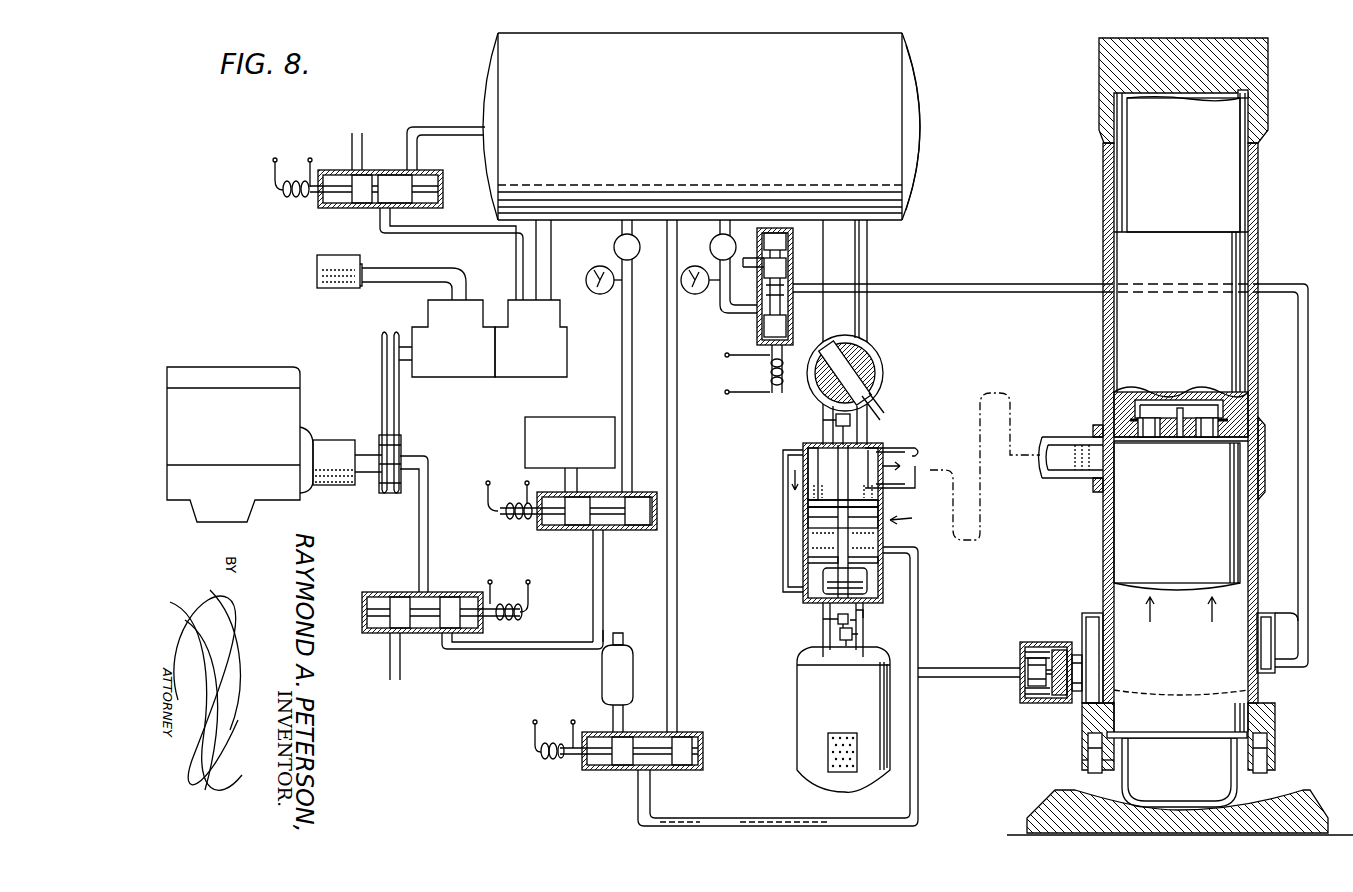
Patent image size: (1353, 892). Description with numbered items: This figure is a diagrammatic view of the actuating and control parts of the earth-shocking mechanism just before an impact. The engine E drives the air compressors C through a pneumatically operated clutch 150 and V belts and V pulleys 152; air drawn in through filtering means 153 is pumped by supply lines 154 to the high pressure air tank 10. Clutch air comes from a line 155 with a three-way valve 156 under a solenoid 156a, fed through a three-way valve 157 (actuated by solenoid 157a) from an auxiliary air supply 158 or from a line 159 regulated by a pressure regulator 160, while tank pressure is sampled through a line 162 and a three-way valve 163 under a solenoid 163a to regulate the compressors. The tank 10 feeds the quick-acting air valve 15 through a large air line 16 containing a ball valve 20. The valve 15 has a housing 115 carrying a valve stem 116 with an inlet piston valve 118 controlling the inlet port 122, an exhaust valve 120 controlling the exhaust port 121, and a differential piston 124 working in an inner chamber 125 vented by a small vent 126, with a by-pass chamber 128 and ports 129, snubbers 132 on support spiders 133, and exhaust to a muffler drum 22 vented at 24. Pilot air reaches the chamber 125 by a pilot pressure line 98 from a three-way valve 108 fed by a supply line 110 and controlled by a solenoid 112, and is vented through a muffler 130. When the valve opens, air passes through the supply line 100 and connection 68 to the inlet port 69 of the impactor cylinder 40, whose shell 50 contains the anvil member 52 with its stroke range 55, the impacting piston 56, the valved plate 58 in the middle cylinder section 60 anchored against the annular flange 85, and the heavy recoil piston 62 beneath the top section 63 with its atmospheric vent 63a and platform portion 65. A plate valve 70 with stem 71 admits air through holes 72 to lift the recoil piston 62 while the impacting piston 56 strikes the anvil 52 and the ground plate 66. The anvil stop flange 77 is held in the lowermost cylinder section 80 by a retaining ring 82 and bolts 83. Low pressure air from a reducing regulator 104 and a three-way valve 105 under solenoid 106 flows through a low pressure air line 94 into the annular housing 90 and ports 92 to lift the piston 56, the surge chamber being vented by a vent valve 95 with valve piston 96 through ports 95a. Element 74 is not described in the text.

The air tank 10 is at (887, 63).
The quick-acting air valve 15 is at (913, 518).
The air line 16 is at (866, 258).
The ball valve 20 is at (876, 356).
The muffler drum 22 is at (843, 719).
The vent 24 is at (828, 752).
The impactor cylinder 40 is at (1267, 204).
The shell 50 is at (1103, 156).
The anvil member 52 is at (1181, 748).
The stroke range 55 is at (1228, 758).
The impacting piston 56 is at (1177, 532).
The valved plate 58 is at (1250, 410).
The middle cylinder section 60 is at (1264, 466).
The recoil piston 62 is at (1181, 247).
The top section 63 is at (1268, 72).
The atmospheric vent 63a is at (1270, 98).
The platform portion 65 is at (1170, 99).
The ground plate 66 is at (1045, 814).
The high-volume high-pressure connection 68 is at (1095, 437).
The inlet port 69 is at (1098, 478).
The plate valve 70 is at (1158, 402).
The stem 71 is at (1178, 436).
The holes 72 is at (1148, 438).
The valve seats 74 is at (1135, 422).
The stop flange 77 is at (1200, 735).
The lowermost cylinder section 80 is at (1275, 725).
The retaining ring 82 is at (1082, 760).
The bolts 83 is at (1088, 776).
The annular flange 85 is at (1258, 437).
The annular housing 90 is at (1290, 595).
The ports 92 is at (1103, 690).
The low pressure air line 94 is at (975, 285).
The vent valve 95 is at (1040, 634).
The ports 95a is at (1077, 640).
The valve piston 96 is at (1045, 695).
The pilot pressure line 98 is at (722, 812).
The supply line 100 is at (1042, 487).
The reducing regulator 104 is at (720, 240).
The three-way valve 105 is at (751, 334).
The solenoid 106 is at (762, 365).
The three-way valve 108 is at (695, 726).
The supply line 110 is at (688, 665).
The solenoid 112 is at (538, 756).
The housing 115 is at (808, 445).
The valve stem 116 is at (881, 549).
The inlet piston valve 118 is at (884, 452).
The exhaust valve 120 is at (812, 598).
The exhaust port 121 is at (862, 618).
The inlet port 122 is at (858, 442).
The differential piston 124 is at (818, 518).
The inner chamber 125 is at (815, 540).
The vent 126 is at (880, 510).
The by-pass chamber 128 is at (788, 506).
The ports 129 is at (786, 466).
The muffler 130 is at (602, 680).
The snubbers 132 is at (836, 418).
The support spiders 133 is at (882, 405).
The pneumatically operated clutch 150 is at (405, 446).
The V belts and V pulleys 152 is at (382, 400).
The filtering means 153 is at (317, 272).
The supply lines 154 is at (552, 250).
The line 155 is at (419, 513).
The three-way valve 156 is at (384, 585).
The solenoid 156a is at (518, 600).
The three-way valve 157 is at (559, 539).
The solenoid 157a is at (503, 514).
The auxiliary air supply 158 is at (545, 418).
The line 159 is at (622, 330).
The pressure regulator 160 is at (633, 250).
The line 162 is at (462, 125).
The three-way valve 163 is at (395, 128).
The solenoid 163a is at (290, 195).
The engine unit E is at (226, 359).
The air compressors C is at (514, 386).